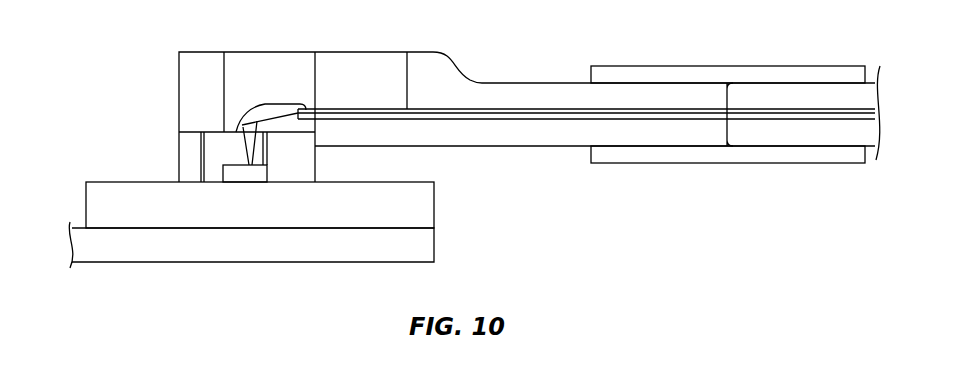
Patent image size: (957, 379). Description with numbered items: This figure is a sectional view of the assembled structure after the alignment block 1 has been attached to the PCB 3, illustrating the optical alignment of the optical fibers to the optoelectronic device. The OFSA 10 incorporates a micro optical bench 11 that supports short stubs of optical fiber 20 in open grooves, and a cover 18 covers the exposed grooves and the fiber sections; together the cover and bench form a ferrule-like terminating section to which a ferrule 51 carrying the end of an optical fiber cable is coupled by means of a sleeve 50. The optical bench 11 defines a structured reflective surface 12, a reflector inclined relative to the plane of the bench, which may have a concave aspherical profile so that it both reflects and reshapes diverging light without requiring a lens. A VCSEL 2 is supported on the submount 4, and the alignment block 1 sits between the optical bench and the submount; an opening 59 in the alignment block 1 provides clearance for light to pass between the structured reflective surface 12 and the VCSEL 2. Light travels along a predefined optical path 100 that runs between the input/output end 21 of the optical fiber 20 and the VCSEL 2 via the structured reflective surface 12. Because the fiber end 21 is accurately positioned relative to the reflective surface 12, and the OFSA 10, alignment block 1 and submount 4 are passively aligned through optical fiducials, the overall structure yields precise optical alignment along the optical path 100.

The alignment block 1 is at (178, 160).
The VCSEL 2 is at (250, 172).
The PCB 3 is at (434, 245).
The submount 4 is at (85, 192).
The OFSA 10 is at (553, 76).
The micro optical bench 11 is at (400, 60).
The structured reflective surface 12 is at (255, 119).
The cover 18 is at (547, 133).
The optical fiber 20 is at (390, 119).
The input/output end of optical fiber 21 is at (297, 102).
The sleeve 50 is at (712, 66).
The ferrule 51 is at (823, 132).
The opening 59 is at (205, 150).
The optical path 100 is at (270, 106).